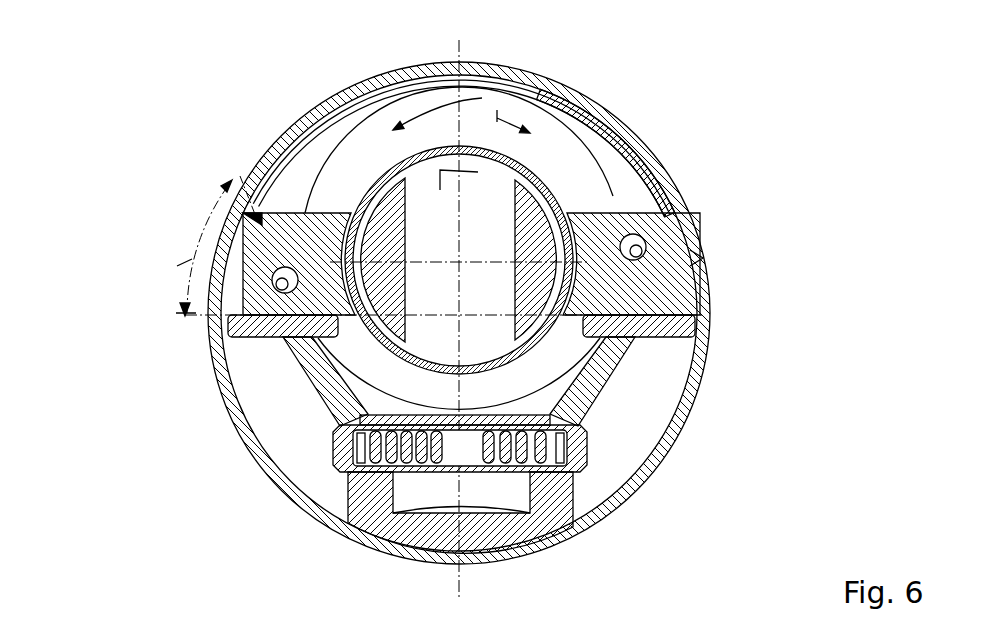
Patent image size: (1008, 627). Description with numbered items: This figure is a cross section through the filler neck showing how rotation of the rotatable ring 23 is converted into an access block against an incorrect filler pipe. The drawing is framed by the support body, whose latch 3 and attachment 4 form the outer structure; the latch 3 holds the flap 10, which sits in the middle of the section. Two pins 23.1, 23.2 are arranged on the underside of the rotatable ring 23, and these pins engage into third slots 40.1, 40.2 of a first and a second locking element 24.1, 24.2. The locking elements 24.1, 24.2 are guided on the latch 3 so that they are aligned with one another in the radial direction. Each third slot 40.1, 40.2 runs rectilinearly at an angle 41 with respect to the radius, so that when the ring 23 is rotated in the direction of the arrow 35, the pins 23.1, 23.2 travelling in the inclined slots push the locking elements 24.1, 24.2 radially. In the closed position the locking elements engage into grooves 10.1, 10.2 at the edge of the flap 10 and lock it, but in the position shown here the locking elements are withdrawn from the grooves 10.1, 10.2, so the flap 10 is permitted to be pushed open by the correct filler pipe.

The latch 3 is at (322, 383).
The attachment 4 is at (272, 465).
The flap 10 is at (528, 192).
The groove 10.1 is at (370, 310).
The groove 10.2 is at (707, 323).
The rotatable ring 23 is at (550, 153).
The pin 23.1 is at (278, 283).
The pin 23.2 is at (633, 245).
The first locking element 24.1 is at (308, 220).
The second locking element 24.2 is at (595, 227).
The arrow 35 is at (580, 97).
The third slot 40.1 is at (262, 215).
The third slot 40.2 is at (703, 258).
The angle 41 is at (185, 262).